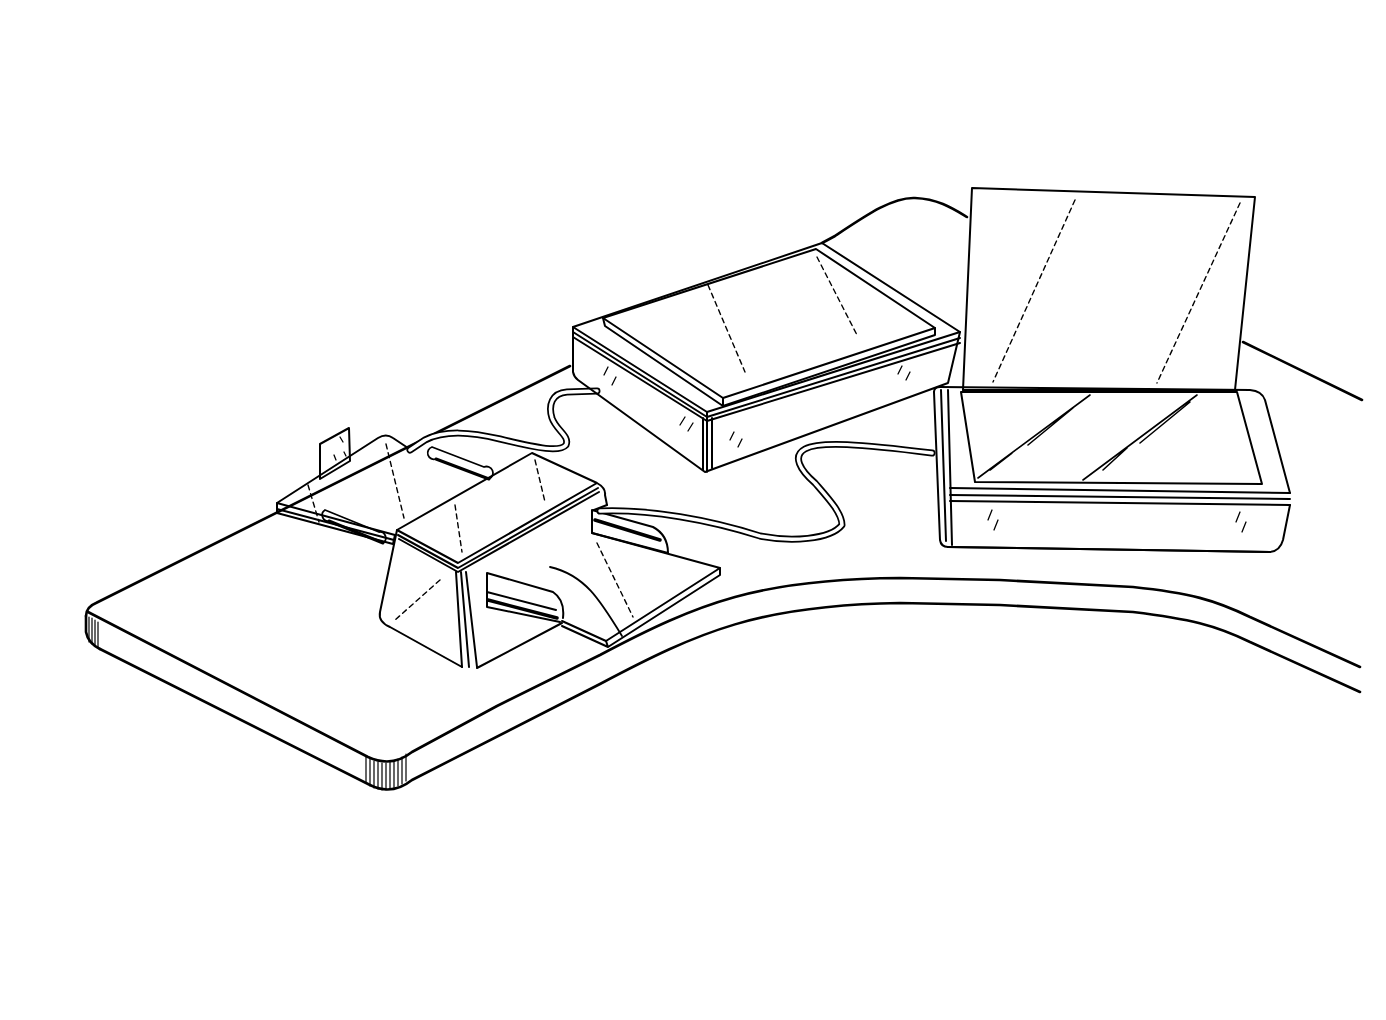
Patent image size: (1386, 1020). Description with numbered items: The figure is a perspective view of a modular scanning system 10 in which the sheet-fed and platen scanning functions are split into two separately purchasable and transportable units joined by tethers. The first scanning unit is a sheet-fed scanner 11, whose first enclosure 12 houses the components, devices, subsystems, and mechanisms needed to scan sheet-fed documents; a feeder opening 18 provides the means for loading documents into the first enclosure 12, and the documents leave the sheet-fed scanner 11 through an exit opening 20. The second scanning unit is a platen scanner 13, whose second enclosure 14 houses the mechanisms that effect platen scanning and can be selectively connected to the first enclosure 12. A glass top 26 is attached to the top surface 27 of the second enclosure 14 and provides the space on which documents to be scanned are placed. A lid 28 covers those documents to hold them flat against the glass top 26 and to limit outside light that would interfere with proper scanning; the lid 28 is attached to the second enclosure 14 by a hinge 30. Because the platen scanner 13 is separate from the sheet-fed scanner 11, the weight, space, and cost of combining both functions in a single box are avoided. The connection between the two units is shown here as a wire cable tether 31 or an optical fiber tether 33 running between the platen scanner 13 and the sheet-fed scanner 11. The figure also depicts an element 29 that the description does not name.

The modular scanning system 10 is at (456, 118).
The sheet-fed scanner 11 is at (505, 465).
The first enclosure 12 is at (427, 647).
The platen scanner 13 is at (591, 321).
The second enclosure 14 is at (1283, 532).
The feeder opening 18 is at (622, 636).
The exit opening 20 is at (426, 499).
The glass top 26 is at (1232, 420).
The top surface 27 is at (1273, 481).
The lid 28 is at (678, 312).
The support plate 29 is at (303, 497).
The hinge 30 is at (1103, 390).
The wire cable tether 31 is at (547, 400).
The optical fiber tether 33 is at (815, 543).